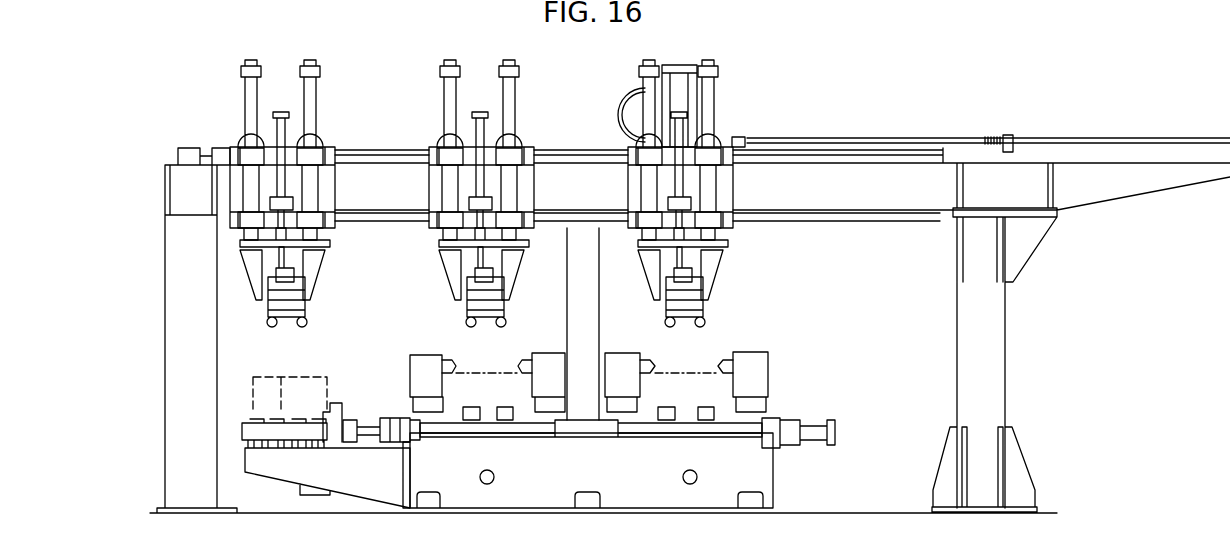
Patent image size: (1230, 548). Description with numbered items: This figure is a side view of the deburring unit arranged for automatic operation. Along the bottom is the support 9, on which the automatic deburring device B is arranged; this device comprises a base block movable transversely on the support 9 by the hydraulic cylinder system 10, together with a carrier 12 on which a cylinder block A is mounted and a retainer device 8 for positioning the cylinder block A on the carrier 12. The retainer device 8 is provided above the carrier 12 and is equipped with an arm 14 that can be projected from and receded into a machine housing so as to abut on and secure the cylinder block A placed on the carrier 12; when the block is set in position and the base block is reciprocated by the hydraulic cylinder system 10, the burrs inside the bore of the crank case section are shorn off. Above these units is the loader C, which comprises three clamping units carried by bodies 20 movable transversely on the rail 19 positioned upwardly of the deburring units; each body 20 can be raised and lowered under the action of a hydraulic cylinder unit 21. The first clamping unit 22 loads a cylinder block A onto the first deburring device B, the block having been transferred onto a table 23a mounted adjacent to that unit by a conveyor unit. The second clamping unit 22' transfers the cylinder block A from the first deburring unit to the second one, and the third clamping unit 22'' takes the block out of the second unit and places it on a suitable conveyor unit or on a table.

The retainer device 8 is at (410, 358).
The support 9 is at (546, 478).
The hydraulic cylinder system 10 is at (400, 420).
The carrier 12 is at (647, 437).
The arm 14 is at (448, 368).
The rail 19 is at (896, 150).
The body 20 is at (335, 199).
The hydraulic cylinder unit 21 is at (318, 175).
The first clamping unit 22 is at (309, 288).
The second clamping unit 22' is at (462, 293).
The third clamping unit 22'' is at (712, 287).
The table 23a is at (292, 455).
The cylinder block A is at (281, 377).
The automatic deburring device B is at (542, 343).
The loader C is at (717, 57).